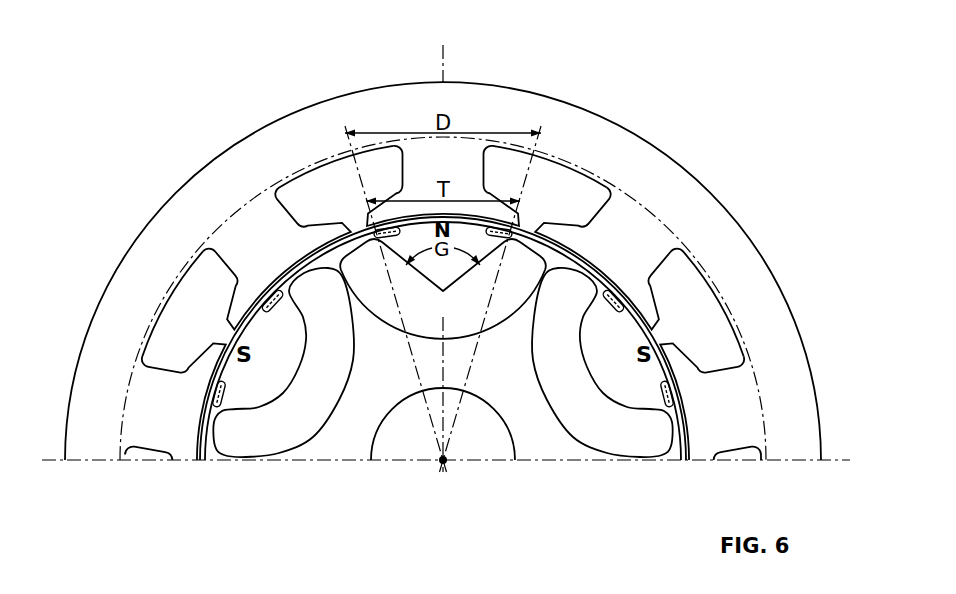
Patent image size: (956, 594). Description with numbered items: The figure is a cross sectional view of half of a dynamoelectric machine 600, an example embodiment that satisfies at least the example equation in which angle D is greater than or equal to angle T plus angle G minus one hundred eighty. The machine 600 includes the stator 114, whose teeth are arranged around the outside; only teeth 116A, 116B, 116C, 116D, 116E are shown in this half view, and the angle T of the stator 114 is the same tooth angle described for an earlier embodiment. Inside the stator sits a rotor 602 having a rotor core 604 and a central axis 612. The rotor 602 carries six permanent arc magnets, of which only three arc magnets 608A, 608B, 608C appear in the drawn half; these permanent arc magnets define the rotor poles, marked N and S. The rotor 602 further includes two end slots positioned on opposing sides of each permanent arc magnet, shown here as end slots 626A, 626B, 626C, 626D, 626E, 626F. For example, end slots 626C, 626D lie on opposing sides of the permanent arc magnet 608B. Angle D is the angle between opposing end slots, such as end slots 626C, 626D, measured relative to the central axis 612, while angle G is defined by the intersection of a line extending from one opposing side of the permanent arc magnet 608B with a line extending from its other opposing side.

The dynamoelectric machine 600 is at (704, 62).
The stator 114 is at (768, 233).
The tooth 116A is at (167, 383).
The tooth 116B is at (270, 217).
The tooth 116C is at (459, 145).
The tooth 116D is at (637, 232).
The tooth 116E is at (717, 403).
The rotor 602 is at (543, 480).
The rotor core 604 is at (567, 450).
The central axis 612 is at (442, 464).
The permanent arc magnet 608A is at (247, 447).
The permanent arc magnet 608B is at (385, 306).
The permanent arc magnet 608C is at (560, 364).
The end slot 626A is at (215, 428).
The end slot 626B is at (283, 290).
The end slot 626C is at (362, 236).
The end slot 626D is at (506, 232).
The end slot 626E is at (596, 284).
The end slot 626F is at (672, 422).